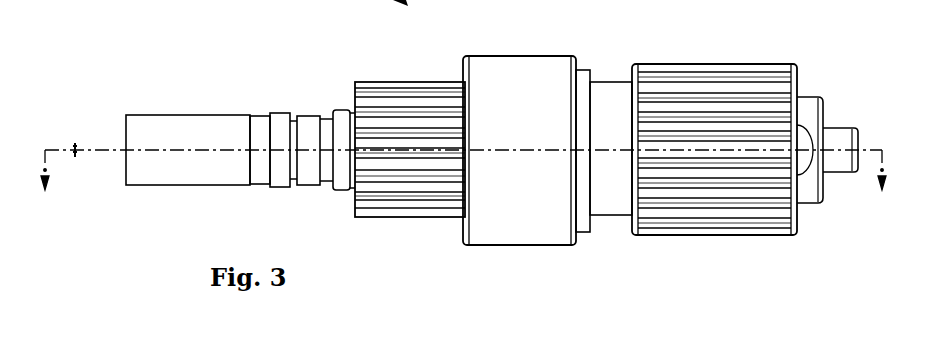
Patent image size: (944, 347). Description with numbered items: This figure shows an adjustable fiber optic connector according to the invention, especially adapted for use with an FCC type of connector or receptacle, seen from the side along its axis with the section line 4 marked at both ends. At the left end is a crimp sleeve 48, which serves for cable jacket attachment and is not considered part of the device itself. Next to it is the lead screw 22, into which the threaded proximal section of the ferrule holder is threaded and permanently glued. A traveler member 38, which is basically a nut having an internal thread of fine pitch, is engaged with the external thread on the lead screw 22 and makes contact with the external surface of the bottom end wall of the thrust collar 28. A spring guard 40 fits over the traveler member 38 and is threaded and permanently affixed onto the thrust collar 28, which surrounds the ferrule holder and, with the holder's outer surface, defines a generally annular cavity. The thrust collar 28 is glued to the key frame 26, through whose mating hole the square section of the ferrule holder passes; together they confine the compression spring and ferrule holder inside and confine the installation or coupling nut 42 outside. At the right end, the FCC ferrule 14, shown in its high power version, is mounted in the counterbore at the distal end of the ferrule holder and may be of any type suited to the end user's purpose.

The section line 4- 4 is at (463, 188).
The FCC ferrule 14 is at (843, 172).
The lead screw 22 is at (305, 185).
The key frame 26 is at (808, 203).
The thrust collar 28 is at (608, 215).
The traveler member 38 is at (404, 217).
The spring guard 40 is at (504, 245).
The coupling nut 42 is at (710, 235).
The crimp sleeve 48 is at (180, 185).